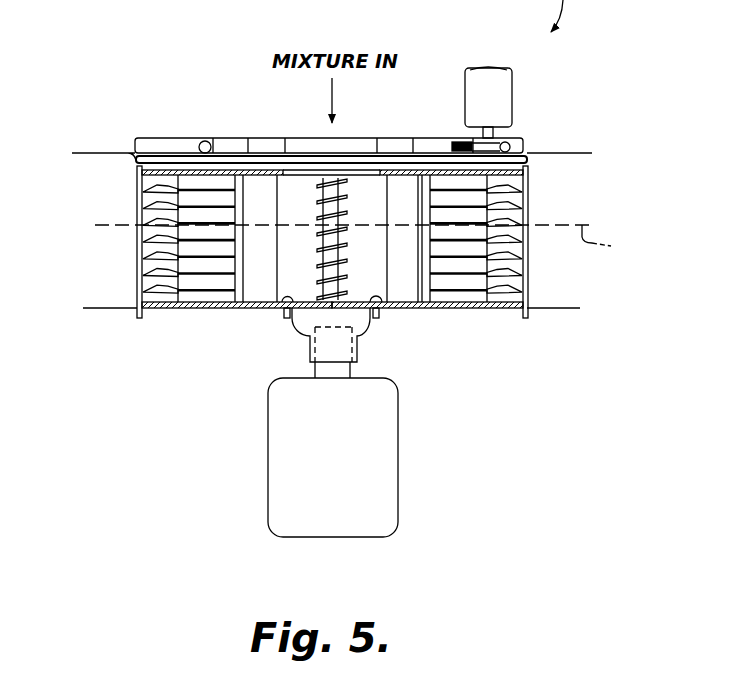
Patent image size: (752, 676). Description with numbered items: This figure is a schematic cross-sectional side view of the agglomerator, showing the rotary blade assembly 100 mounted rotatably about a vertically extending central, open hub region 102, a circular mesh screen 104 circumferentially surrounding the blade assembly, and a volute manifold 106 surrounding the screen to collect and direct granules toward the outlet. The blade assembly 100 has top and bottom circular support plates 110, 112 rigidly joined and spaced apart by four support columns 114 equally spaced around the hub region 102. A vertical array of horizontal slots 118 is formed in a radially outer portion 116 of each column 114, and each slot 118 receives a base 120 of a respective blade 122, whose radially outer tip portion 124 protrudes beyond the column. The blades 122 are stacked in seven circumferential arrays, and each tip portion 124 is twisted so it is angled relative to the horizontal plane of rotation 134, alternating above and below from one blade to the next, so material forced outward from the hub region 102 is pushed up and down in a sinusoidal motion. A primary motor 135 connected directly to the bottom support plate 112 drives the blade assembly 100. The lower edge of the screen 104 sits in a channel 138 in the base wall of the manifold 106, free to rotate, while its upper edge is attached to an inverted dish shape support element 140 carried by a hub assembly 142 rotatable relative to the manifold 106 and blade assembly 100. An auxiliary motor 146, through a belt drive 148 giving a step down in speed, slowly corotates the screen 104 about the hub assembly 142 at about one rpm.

The rotary blade assembly 100 is at (442, 343).
The central, open hub region 102 is at (291, 267).
The mesh screen 104 is at (140, 250).
The volute manifold 106 is at (557, 308).
The top support plate 110 is at (183, 172).
The bottom support plate 112 is at (173, 310).
The support column 114 is at (403, 283).
The radially outer portion 116 is at (460, 303).
The horizontal slot 118 is at (200, 300).
The base 120 is at (202, 222).
The blade 122 is at (512, 245).
The radially outer tip portion 124 is at (517, 182).
The horizontal plane of rotation 134 is at (373, 241).
The primary motor 135 is at (398, 487).
The channel 138 is at (528, 312).
The inverted dish shape support element 140 is at (136, 160).
The hub assembly 142 is at (230, 113).
The auxiliary motor 146 is at (512, 106).
The belt drive 148 is at (460, 140).